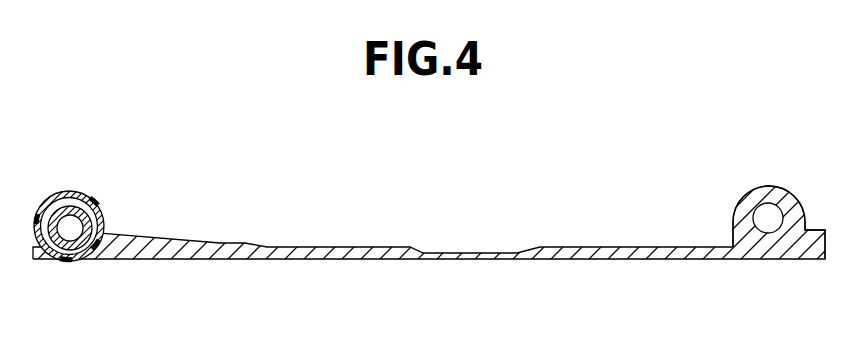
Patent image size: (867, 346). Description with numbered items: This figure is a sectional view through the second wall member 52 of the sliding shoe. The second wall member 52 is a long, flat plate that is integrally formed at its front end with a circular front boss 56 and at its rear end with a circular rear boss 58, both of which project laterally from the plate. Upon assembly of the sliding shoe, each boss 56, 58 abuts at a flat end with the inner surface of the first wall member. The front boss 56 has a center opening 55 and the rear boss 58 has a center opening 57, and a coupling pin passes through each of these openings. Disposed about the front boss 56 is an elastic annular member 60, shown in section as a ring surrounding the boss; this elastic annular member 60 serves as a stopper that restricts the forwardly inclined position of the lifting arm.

The second wall member 52 is at (362, 260).
The center opening 55 is at (76, 238).
The front boss 56 is at (102, 206).
The center opening 57 is at (772, 225).
The rear boss 58 is at (779, 226).
The elastic annular member 60 is at (89, 227).